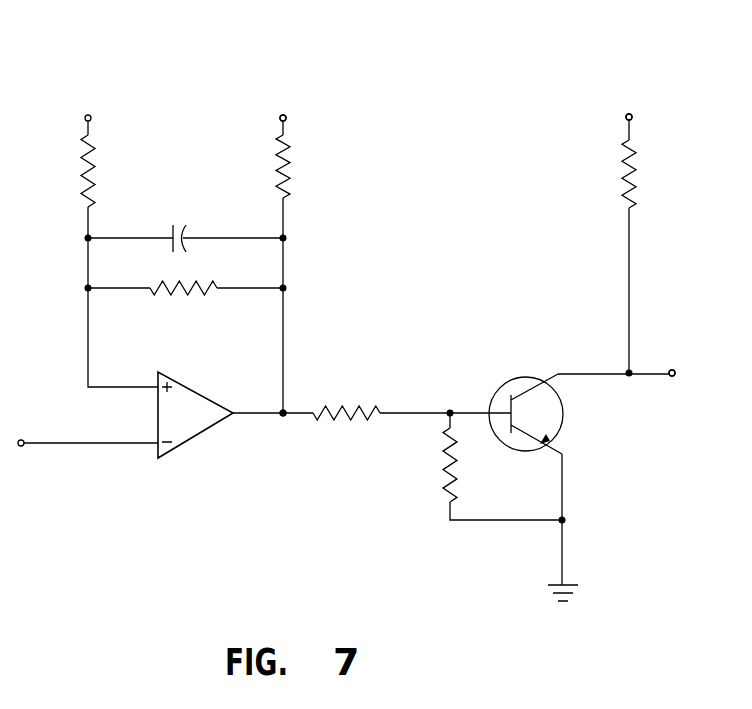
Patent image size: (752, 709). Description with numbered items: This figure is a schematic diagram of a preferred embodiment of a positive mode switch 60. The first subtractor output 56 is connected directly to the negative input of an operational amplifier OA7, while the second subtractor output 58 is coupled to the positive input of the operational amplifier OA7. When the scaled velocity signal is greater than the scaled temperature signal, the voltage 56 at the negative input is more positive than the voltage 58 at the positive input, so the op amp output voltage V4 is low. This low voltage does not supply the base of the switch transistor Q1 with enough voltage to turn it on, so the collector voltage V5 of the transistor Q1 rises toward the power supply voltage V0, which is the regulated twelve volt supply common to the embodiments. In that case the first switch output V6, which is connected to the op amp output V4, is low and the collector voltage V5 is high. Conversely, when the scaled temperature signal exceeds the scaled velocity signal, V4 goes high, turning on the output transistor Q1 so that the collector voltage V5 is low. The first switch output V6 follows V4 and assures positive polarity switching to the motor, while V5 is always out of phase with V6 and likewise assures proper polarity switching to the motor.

The positive mode switch 60 is at (421, 112).
The second subtractor output 58 is at (88, 130).
The first subtractor output 56 is at (36, 440).
The operational amplifier OA7 is at (204, 432).
The operational amplifier output voltage V4 is at (283, 417).
The switch transistor Q1 is at (563, 414).
The first switch output V6 is at (278, 101).
The power supply voltage V0 is at (622, 100).
The transistor collector voltage V5 is at (685, 376).